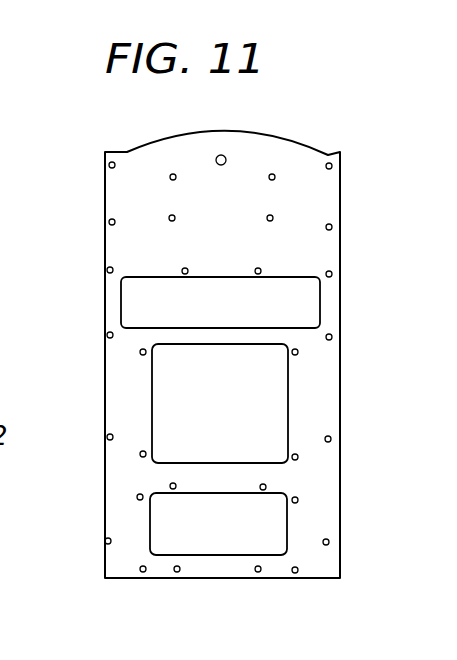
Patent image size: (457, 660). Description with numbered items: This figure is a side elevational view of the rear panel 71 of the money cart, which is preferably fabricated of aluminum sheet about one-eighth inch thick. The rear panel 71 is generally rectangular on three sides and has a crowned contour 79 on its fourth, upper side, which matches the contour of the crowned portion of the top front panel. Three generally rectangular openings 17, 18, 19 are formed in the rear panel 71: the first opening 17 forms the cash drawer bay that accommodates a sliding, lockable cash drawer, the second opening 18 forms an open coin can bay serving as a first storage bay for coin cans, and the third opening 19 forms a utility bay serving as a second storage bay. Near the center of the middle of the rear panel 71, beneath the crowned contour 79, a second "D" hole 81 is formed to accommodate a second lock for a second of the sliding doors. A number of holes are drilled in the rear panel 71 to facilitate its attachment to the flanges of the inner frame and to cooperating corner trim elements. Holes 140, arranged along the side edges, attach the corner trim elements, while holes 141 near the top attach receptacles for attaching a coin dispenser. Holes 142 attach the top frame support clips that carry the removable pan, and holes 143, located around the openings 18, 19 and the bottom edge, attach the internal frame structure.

The crowned contour 79 is at (190, 130).
The second "D" hole 81 is at (226, 155).
The holes 140 is at (109, 222).
The holes 141 is at (269, 178).
The holes 142 is at (255, 271).
The first opening 17 is at (287, 288).
The second opening 18 is at (258, 378).
The third opening 19 is at (272, 526).
The rear panel 71 is at (90, 366).
The holes 143 is at (141, 354).